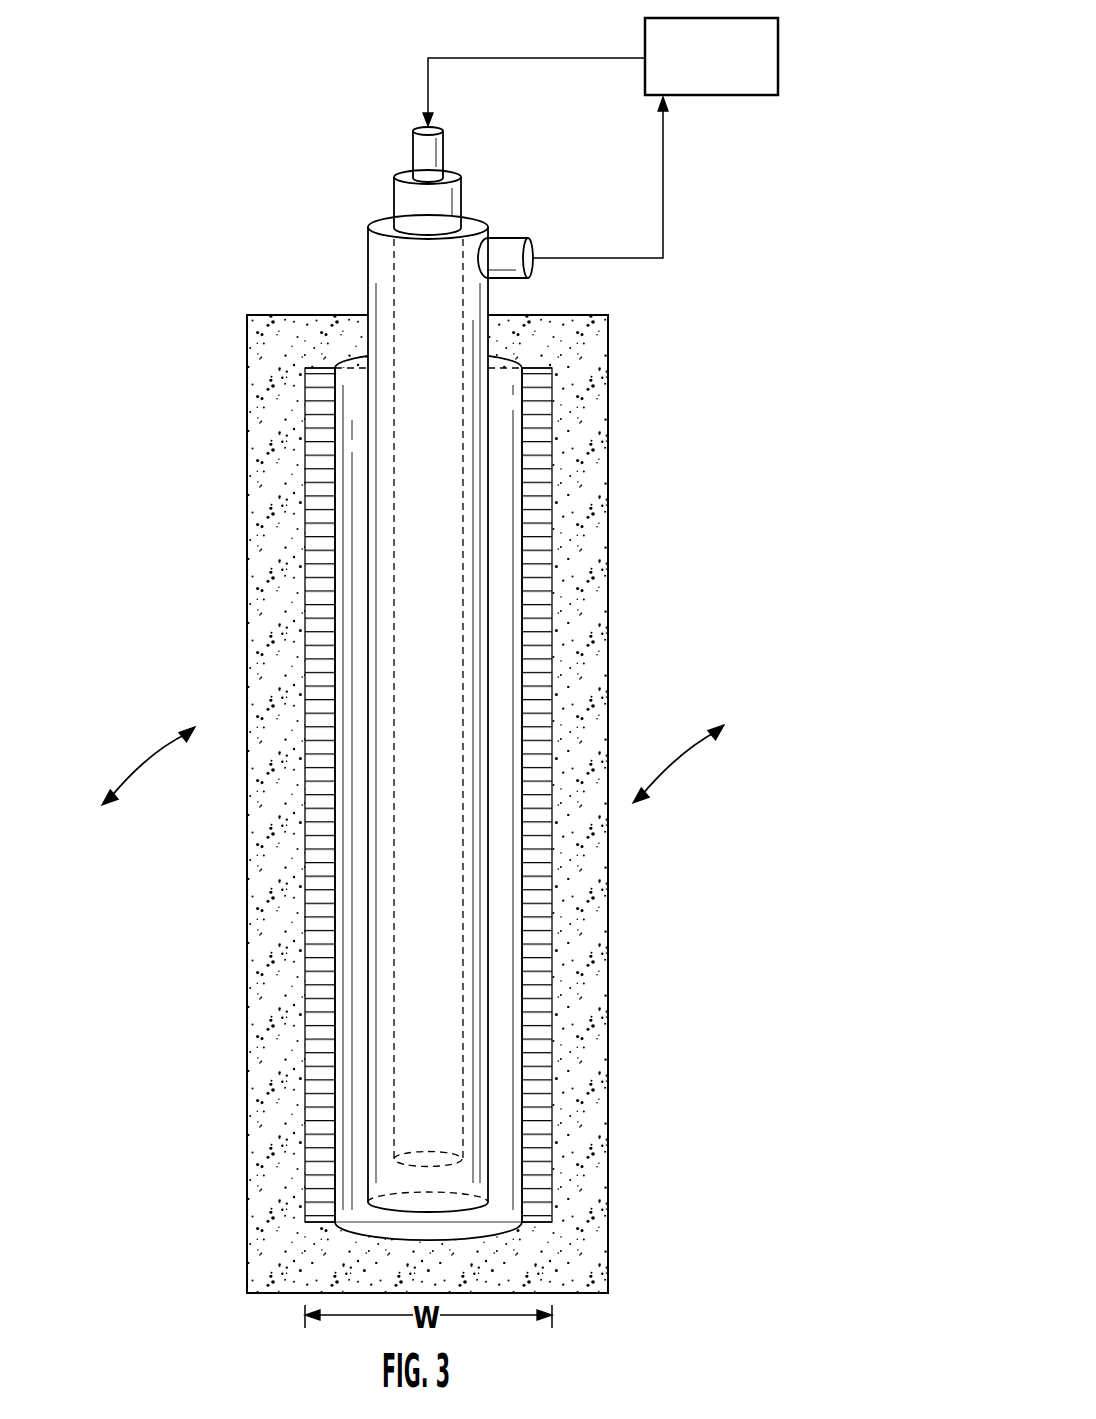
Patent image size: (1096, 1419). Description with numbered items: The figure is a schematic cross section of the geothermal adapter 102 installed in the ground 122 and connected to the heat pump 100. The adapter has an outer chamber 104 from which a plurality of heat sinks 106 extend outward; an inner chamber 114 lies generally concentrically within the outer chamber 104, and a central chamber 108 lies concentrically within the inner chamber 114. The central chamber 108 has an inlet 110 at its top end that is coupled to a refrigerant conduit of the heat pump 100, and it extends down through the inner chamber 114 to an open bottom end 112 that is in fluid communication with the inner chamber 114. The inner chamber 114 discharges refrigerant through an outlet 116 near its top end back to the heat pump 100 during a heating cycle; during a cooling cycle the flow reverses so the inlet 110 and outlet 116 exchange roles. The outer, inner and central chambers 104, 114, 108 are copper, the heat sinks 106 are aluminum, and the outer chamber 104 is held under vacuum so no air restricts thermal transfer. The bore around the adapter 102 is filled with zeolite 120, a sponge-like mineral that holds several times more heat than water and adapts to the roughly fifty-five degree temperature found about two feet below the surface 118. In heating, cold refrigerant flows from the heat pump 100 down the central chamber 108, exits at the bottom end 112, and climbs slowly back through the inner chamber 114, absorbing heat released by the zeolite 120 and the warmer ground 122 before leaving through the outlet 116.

The heat pump 100 is at (779, 56).
The geothermal adapter 102 is at (373, 214).
The outer chamber 104 is at (366, 262).
The heat sinks 106 is at (303, 413).
The central chamber 108 is at (446, 154).
The inlet 110 is at (438, 126).
The bottom end 112 is at (462, 1115).
The inner chamber 114 is at (475, 1040).
The outlet 116 is at (519, 238).
The surface 118 is at (648, 300).
The zeolite 120 is at (268, 460).
The ground 122 is at (148, 763).